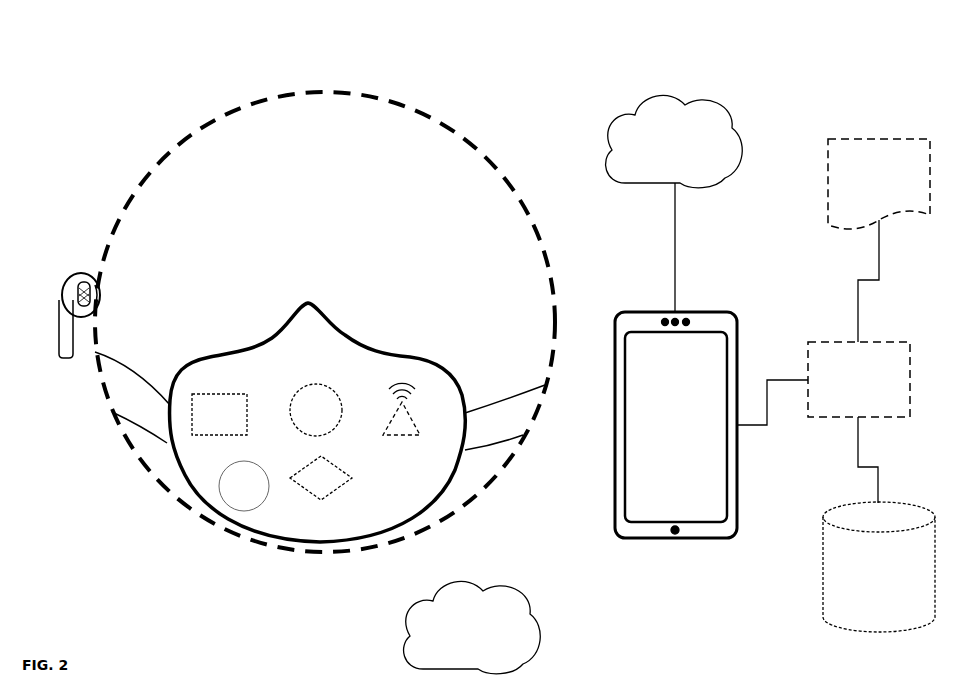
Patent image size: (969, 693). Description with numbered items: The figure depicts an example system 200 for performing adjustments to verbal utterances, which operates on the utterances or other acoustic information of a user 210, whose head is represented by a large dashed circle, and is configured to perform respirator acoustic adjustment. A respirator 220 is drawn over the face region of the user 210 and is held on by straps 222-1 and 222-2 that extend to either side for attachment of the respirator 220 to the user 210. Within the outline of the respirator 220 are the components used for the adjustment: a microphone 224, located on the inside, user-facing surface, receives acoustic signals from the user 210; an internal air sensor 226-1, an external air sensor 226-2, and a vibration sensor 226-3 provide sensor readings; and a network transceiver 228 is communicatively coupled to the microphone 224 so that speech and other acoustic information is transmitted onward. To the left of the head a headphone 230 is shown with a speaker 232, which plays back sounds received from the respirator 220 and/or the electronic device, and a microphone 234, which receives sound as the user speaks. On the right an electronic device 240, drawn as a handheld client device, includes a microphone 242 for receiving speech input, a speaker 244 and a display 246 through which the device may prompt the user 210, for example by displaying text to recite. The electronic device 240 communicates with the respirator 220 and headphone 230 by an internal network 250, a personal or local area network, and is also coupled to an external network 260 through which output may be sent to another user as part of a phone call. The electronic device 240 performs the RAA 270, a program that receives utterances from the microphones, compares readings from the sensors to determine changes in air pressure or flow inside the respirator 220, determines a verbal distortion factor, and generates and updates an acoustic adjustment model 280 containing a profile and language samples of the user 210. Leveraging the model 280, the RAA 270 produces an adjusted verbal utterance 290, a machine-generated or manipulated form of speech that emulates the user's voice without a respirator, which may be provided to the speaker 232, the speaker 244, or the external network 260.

The system 200 is at (76, 73).
The user 210 is at (297, 187).
The respirator 220 is at (298, 358).
The strap 222-1 is at (132, 397).
The strap 222-2 is at (505, 417).
The microphone 224 is at (308, 486).
The internal air sensor 226-1 is at (296, 418).
The external air sensor 226-2 is at (224, 494).
The vibration sensor 226-3 is at (199, 421).
The network transceiver 228 is at (402, 438).
The headphone 230 is at (58, 316).
The speaker 232 is at (75, 293).
The microphone 234 is at (61, 365).
The electronic device 240 is at (632, 429).
The microphone 242 is at (667, 547).
The speaker 244 is at (650, 303).
The display 246 is at (662, 438).
The internal network 250 is at (460, 650).
The external network 260 is at (662, 165).
The RAA 270 is at (846, 399).
The acoustic adjustment model 280 is at (866, 594).
The adjusted verbal utterance 290 is at (879, 184).